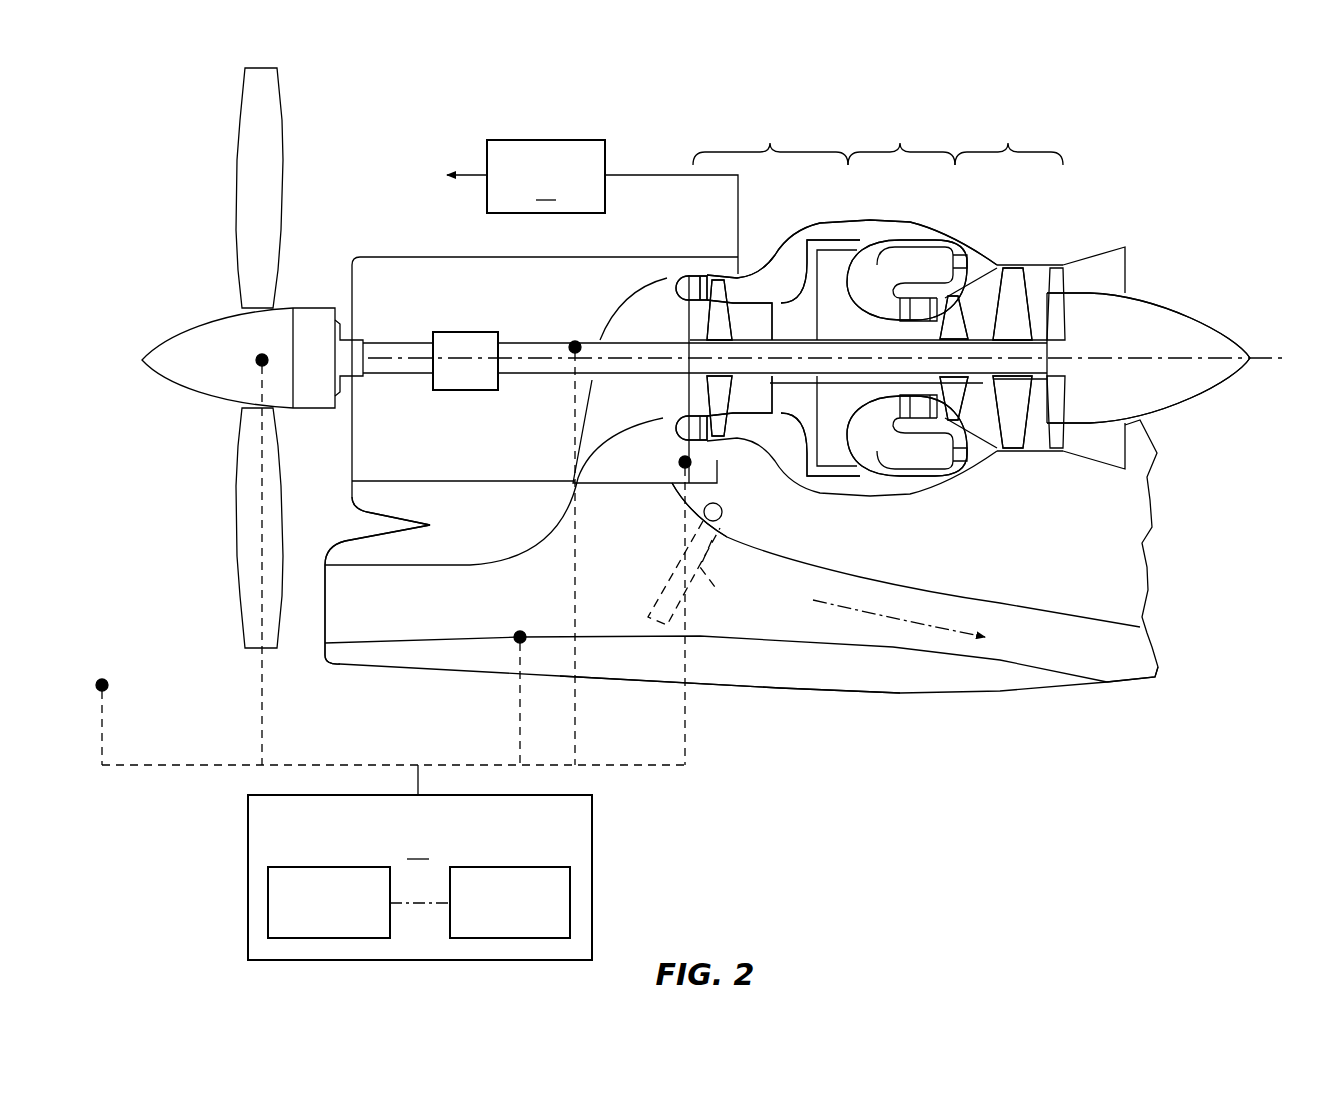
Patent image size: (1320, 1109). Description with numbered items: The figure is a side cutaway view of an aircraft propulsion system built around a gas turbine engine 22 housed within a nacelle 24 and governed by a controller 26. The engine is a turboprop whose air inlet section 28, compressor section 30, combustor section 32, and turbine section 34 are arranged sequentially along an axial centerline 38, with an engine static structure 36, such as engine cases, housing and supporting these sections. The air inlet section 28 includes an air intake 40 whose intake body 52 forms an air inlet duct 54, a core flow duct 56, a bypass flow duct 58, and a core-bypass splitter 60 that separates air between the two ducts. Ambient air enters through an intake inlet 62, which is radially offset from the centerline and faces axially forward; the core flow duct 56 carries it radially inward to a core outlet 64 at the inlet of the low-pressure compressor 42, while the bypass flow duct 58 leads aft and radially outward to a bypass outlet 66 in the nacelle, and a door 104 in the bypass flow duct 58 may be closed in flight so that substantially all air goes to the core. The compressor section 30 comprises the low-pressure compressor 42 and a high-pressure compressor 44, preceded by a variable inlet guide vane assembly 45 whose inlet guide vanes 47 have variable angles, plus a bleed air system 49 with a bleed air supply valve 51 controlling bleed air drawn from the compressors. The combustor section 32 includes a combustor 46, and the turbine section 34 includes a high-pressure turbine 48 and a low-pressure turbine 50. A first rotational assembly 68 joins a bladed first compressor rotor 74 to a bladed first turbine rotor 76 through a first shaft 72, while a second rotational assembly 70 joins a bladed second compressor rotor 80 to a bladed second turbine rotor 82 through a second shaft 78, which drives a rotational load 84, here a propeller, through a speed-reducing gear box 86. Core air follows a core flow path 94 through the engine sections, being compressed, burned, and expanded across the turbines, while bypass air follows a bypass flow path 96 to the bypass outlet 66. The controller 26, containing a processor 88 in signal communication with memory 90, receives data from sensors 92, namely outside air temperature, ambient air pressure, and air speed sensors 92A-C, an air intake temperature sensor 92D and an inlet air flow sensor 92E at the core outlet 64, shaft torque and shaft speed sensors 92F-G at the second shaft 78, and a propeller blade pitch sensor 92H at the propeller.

The gas turbine engine 22 is at (1107, 500).
The nacelle 24 is at (842, 694).
The controller 26 is at (420, 877).
The air inlet section 28 is at (352, 682).
The compressor section 30 is at (770, 141).
The combustor section 32 is at (901, 141).
The turbine section 34 is at (1009, 141).
The engine static structure 36 is at (922, 228).
The axial centerline 38 is at (1275, 362).
The air intake 40 is at (468, 656).
The low-pressure compressor 42 is at (720, 462).
The high-pressure compressor 44 is at (793, 487).
The variable inlet guide vane assembly 45 is at (683, 276).
The combustor 46 is at (885, 463).
The inlet guide vane 47 is at (733, 488).
The high-pressure turbine 48 is at (997, 455).
The bleed air system 49 is at (652, 157).
The low-pressure turbine 50 is at (1043, 455).
The bleed air supply valve 51 is at (592, 207).
The intake body 52 is at (393, 656).
The air inlet duct 54 is at (393, 568).
The core flow duct 56 is at (572, 480).
The bypass flow duct 58 is at (988, 660).
The core-bypass splitter 60 is at (673, 498).
The intake inlet 62 is at (323, 583).
The core outlet 64 is at (682, 452).
The bypass outlet 66 is at (1167, 692).
The first rotational assembly 68 is at (862, 330).
The second rotational assembly 70 is at (752, 325).
The first shaft 72 is at (838, 330).
The bladed first compressor rotor 74 is at (790, 320).
The bladed first turbine rotor 76 is at (968, 307).
The second shaft 78 is at (643, 345).
The bladed second compressor rotor 80 is at (710, 303).
The bladed second turbine rotor 82 is at (1027, 300).
The rotational load 84 is at (212, 352).
The speed-reducing gear box 86 is at (465, 332).
The processor 88 is at (318, 927).
The memory 90 is at (499, 927).
The sensors 92 is at (714, 735).
The outside air temperature sensor, ambient air pressure sensor, and air speed senso 92A-C is at (107, 680).
The air intake temperature sensor 92D is at (680, 468).
The inlet air flow sensor 92E is at (520, 631).
The shaft torque sensor and shaft speed sensor 92F-G is at (575, 341).
The propeller blade pitch sensor 92H is at (258, 363).
The core flow path 94 is at (623, 470).
The bypass flow path 96 is at (898, 618).
The door 104 is at (718, 588).